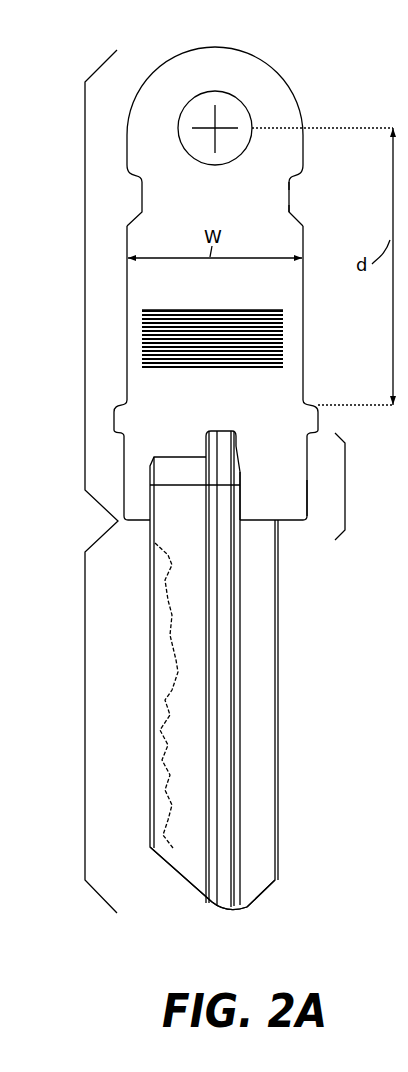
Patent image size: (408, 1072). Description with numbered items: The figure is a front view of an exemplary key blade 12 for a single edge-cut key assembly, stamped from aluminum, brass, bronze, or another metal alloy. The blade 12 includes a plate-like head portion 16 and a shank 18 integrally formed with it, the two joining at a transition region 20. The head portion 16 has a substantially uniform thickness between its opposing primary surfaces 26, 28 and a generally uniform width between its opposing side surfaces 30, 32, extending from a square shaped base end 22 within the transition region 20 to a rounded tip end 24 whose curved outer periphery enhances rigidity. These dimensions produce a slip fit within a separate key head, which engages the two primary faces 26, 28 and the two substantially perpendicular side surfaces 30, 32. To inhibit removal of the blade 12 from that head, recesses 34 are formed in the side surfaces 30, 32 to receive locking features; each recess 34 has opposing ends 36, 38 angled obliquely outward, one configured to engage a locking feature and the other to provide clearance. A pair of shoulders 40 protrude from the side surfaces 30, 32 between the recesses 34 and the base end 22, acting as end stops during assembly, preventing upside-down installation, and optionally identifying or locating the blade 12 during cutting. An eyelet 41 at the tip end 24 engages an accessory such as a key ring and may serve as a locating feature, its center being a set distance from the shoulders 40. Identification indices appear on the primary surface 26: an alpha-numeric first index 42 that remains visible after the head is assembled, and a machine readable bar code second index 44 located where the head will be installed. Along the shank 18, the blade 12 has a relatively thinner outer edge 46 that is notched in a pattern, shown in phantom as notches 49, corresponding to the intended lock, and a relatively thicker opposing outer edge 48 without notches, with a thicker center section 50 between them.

The blade 12 is at (97, 904).
The head portion 16 is at (88, 283).
The shank 18 is at (80, 718).
The transition region 20 is at (347, 490).
The base end 22 is at (312, 503).
The tip end 24 is at (291, 81).
The primary surface 26 is at (288, 348).
The primary surface 28 is at (288, 307).
The side surface 30 is at (127, 337).
The side surface 32 is at (303, 372).
The recess 34 is at (142, 200).
The end of recess 36 is at (303, 176).
The end of recess 38 is at (303, 219).
The shoulder 40 is at (116, 429).
The eyelet 41 is at (225, 97).
The first index 42 is at (276, 493).
The second index 44 is at (205, 392).
The outer edge 46 is at (181, 848).
The opposing outer edge 48 is at (263, 862).
The notches 49 is at (158, 705).
The center section 50 is at (223, 898).